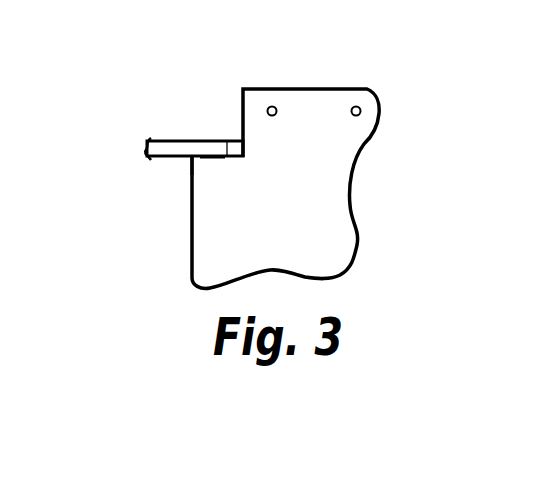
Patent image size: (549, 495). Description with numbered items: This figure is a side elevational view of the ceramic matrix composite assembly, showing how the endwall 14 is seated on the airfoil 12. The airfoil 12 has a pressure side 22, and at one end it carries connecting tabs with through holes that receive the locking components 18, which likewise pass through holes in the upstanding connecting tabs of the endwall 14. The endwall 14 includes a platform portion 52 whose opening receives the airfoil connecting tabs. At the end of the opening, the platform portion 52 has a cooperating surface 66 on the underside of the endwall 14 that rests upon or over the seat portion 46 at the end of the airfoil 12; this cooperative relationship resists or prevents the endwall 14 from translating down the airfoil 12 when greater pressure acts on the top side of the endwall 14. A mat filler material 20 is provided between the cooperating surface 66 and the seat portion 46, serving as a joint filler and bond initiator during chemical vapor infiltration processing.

The airfoil 12 is at (318, 196).
The endwall 14 is at (200, 141).
The locking components 18 is at (366, 97).
The mat filler material 20 is at (187, 158).
The pressure side 22 is at (305, 176).
The seat portion 46 is at (227, 141).
The platform portion 52 is at (146, 143).
The cooperating surface 66 is at (211, 157).